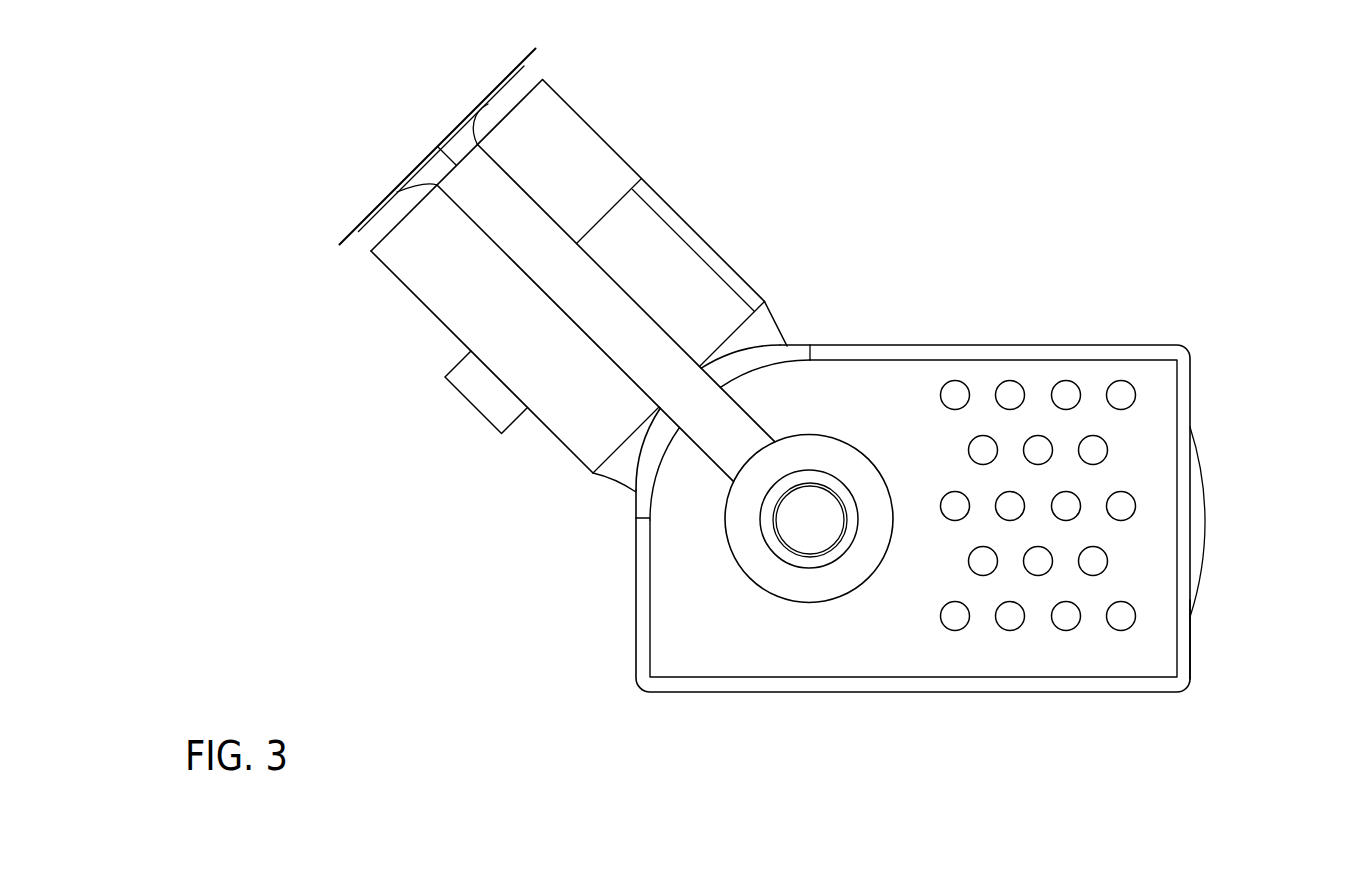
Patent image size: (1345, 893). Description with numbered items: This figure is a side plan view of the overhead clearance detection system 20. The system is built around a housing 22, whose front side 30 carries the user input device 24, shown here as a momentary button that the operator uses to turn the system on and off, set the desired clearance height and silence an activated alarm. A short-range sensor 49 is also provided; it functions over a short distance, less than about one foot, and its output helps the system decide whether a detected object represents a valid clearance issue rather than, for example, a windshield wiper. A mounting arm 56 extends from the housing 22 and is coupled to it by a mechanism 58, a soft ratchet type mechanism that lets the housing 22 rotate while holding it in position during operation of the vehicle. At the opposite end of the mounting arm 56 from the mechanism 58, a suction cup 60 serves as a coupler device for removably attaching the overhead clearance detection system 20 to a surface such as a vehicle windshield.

The overhead clearance detection system 20 is at (1200, 160).
The housing 22 is at (1008, 346).
The user input device 24 is at (1197, 449).
The front side 30 is at (1192, 647).
The short-range sensor 49 is at (472, 405).
The mounting arm 56 is at (612, 283).
The mechanism 58 is at (797, 601).
The suction cup 60 is at (357, 230).